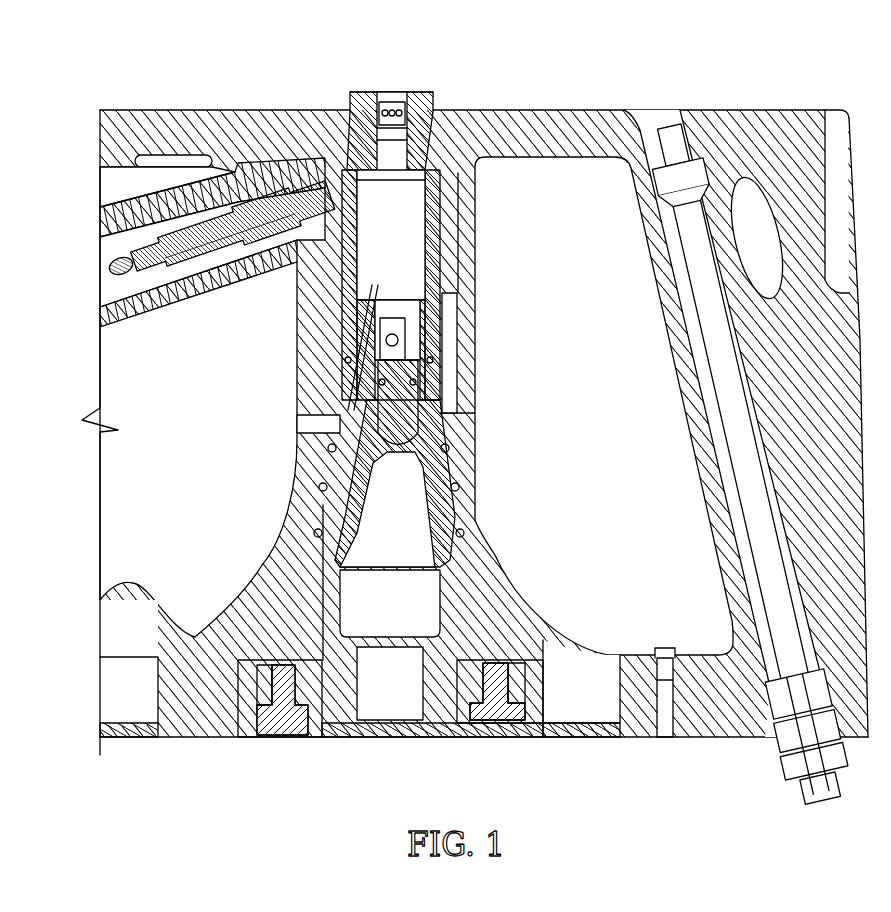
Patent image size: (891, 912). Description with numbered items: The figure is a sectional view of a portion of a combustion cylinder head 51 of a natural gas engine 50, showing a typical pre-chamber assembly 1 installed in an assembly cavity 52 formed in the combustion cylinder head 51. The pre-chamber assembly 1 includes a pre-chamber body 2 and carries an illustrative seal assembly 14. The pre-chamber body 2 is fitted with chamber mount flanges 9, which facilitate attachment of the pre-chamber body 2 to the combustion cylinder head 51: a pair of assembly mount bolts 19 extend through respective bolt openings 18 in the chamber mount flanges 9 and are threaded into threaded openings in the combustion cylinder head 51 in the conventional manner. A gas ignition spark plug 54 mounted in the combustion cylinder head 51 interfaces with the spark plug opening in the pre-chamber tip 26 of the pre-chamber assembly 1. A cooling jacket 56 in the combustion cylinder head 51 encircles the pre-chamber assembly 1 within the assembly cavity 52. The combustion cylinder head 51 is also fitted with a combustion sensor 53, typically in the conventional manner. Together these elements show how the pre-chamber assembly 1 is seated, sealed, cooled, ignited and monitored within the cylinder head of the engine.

The natural gas engine 50 is at (459, 381).
The combustion cylinder head 51 is at (184, 110).
The pre-chamber tip 26 is at (370, 92).
The pre-chamber assembly 1 is at (393, 369).
The combustion sensor 53 is at (703, 222).
The assembly cavity 52 is at (434, 186).
The cooling jacket 56 is at (455, 306).
The seal assembly 14 is at (446, 368).
The pre-chamber body 2 is at (340, 394).
The gas ignition spark plug 54 is at (213, 258).
The chamber mount flanges 9 is at (240, 737).
The bolt openings 18 is at (303, 722).
The assembly mount bolts 19 is at (297, 690).